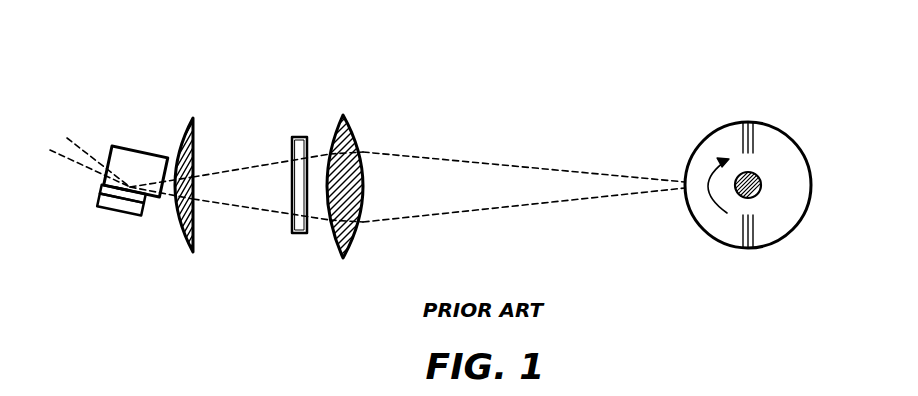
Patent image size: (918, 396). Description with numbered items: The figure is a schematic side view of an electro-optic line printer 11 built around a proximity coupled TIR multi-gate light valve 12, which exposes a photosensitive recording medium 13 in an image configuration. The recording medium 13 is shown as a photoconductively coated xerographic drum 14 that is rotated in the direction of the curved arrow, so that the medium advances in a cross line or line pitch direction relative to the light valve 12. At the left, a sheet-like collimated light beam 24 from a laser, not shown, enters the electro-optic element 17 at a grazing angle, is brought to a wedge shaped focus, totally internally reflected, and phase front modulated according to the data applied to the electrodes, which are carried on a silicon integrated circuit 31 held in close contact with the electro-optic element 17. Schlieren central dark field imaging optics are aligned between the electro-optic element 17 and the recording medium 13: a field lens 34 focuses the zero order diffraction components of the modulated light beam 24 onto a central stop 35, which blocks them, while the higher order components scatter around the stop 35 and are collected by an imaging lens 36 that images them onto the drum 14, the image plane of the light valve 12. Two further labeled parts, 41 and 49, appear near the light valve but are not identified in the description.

The electro-optic line printer 11 is at (445, 148).
The multi-gate light valve 12 is at (148, 137).
The photosensitive recording medium 13 is at (695, 148).
The photoconductively coated xerographic drum 14 is at (702, 232).
The electro-optic element 17 is at (113, 148).
The light beam 24 is at (67, 147).
The silicon integrated circuit 31 is at (343, 98).
The field lens 34 is at (183, 230).
The central stop 35 is at (298, 235).
The imaging lens 36 is at (357, 230).
The mounting block 41 is at (120, 208).
The light emitter 49 is at (108, 185).